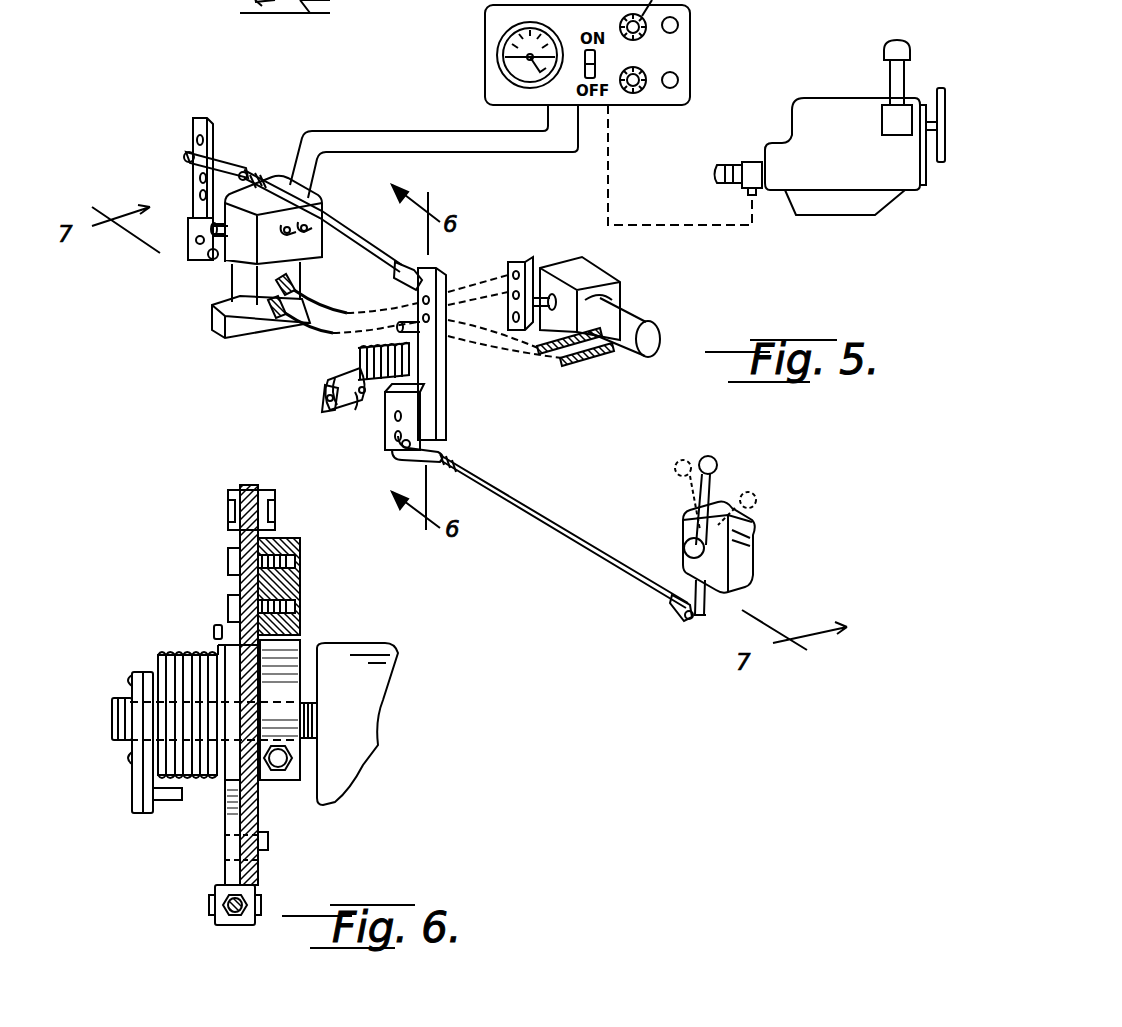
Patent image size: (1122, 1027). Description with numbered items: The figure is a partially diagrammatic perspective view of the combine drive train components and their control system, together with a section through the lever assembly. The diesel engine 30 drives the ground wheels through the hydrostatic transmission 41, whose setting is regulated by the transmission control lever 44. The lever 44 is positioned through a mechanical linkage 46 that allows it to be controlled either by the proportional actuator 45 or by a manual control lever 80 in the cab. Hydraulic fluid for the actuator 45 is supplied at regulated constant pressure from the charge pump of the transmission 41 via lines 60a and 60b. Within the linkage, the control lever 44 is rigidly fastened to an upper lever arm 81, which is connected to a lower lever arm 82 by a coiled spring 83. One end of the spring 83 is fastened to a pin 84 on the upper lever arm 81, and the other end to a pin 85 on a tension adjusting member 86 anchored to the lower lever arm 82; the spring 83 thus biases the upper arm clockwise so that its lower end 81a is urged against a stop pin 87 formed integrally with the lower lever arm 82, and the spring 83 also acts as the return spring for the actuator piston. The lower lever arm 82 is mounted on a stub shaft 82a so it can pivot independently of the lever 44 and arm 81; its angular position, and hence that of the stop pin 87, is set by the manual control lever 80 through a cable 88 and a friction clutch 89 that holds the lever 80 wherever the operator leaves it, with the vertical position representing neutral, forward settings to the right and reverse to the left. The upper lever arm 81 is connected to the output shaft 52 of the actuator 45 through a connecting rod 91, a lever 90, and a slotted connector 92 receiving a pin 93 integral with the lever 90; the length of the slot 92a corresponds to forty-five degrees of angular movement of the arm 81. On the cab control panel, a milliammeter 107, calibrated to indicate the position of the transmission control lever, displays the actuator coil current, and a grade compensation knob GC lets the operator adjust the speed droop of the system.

In FIG. 5, the milliammeter 107 is at (503, 62).
In FIG. 5, the grade compensation knob GC is at (636, 93).
In FIG. 5, the diesel engine 30 is at (820, 110).
In FIG. 5, the lever 90 is at (212, 118).
In FIG. 5, the slotted connector 92 is at (235, 168).
In FIG. 5, the pin 93 is at (182, 158).
In FIG. 5, the slot 92a is at (232, 172).
In FIG. 5, the output shaft 52 is at (197, 250).
In FIG. 5, the actuator 45 is at (224, 292).
In FIG. 5, the connecting rod 91 is at (348, 240).
In FIG. 6, the connecting rod 91 is at (238, 497).
In FIG. 5, the upper lever arm 81 is at (432, 285).
In FIG. 6, the upper lever arm 81 is at (240, 590).
In FIG. 5, the transmission control lever 44 is at (525, 265).
In FIG. 6, the transmission control lever 44 is at (301, 588).
In FIG. 5, the hydrostatic transmission 41 is at (600, 282).
In FIG. 6, the hydrostatic transmission 41 is at (360, 650).
In FIG. 5, the hydraulic line 60a is at (302, 300).
In FIG. 5, the hydraulic line 60b is at (290, 330).
In FIG. 5, the coiled spring 83 is at (356, 352).
In FIG. 6, the coiled spring 83 is at (160, 655).
In FIG. 5, the stub shaft 82a is at (328, 385).
In FIG. 6, the stub shaft 82a is at (115, 712).
In FIG. 5, the tension adjusting member 86 is at (324, 410).
In FIG. 6, the tension adjusting member 86 is at (130, 795).
In FIG. 5, the pin 85 is at (356, 410).
In FIG. 6, the pin 85 is at (165, 798).
In FIG. 5, the stop pin 87 is at (443, 384).
In FIG. 6, the stop pin 87 is at (268, 845).
In FIG. 5, the lower end 81a is at (447, 410).
In FIG. 6, the lower end 81a is at (262, 868).
In FIG. 5, the lower lever arm 82 is at (384, 443).
In FIG. 6, the lower lever arm 82 is at (226, 876).
In FIG. 5, the mechanical linkage 46 is at (464, 444).
In FIG. 5, the cable 88 is at (535, 515).
In FIG. 6, the cable 88 is at (215, 912).
In FIG. 5, the manual control lever 80 is at (698, 500).
In FIG. 5, the friction clutch 89 is at (752, 560).
In FIG. 6, the pin 84 is at (216, 632).